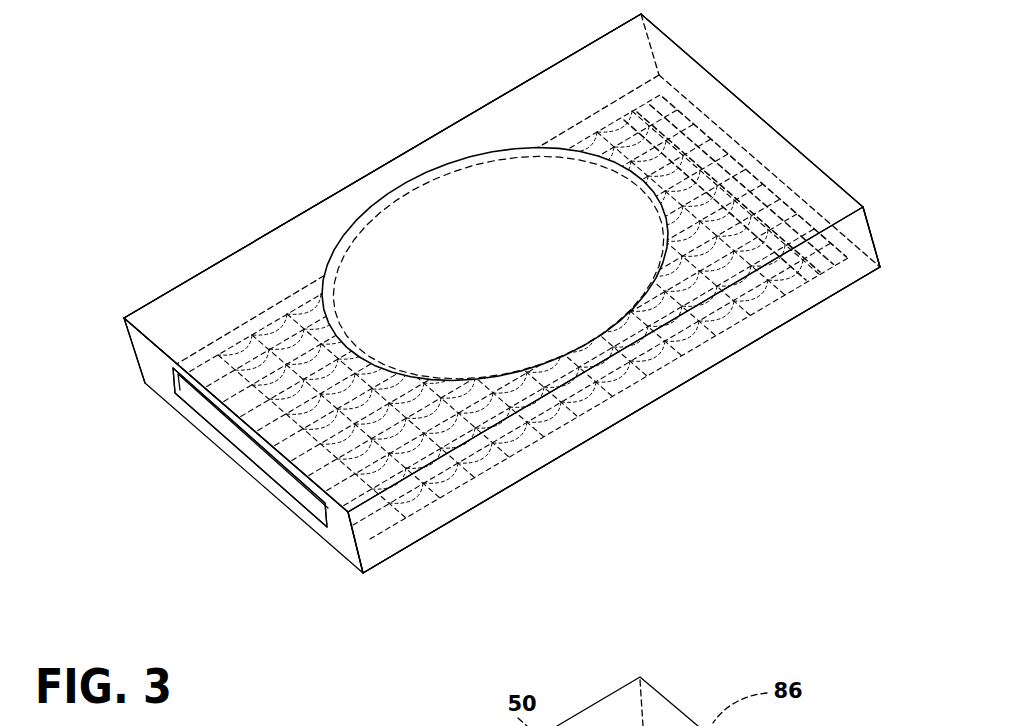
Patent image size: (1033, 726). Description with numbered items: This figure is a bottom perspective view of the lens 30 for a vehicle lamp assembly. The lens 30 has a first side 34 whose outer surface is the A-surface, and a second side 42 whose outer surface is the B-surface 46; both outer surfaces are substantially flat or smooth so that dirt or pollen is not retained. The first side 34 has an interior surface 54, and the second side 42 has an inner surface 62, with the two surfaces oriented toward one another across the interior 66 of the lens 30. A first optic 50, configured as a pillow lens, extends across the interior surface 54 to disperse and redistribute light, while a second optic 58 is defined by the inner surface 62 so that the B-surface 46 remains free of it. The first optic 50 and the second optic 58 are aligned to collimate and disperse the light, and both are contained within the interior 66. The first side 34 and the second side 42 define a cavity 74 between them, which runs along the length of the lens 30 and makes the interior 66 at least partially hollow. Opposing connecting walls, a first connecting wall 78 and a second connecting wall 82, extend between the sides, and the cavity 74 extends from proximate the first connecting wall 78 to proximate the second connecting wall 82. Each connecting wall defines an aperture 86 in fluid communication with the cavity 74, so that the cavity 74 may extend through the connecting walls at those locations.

The lens 30 is at (200, 273).
The first side 34 is at (427, 540).
The second side 42 is at (255, 270).
The B-surface 46 is at (398, 173).
The first optic 50 is at (648, 398).
The interior surface 54 is at (527, 470).
The second optic 58 is at (497, 163).
The inner surface 62 is at (160, 400).
The interior 66 is at (250, 447).
The cavity 74 is at (300, 490).
The first connecting wall 78 is at (342, 537).
The second connecting wall 82 is at (840, 207).
The aperture 86 is at (710, 70).